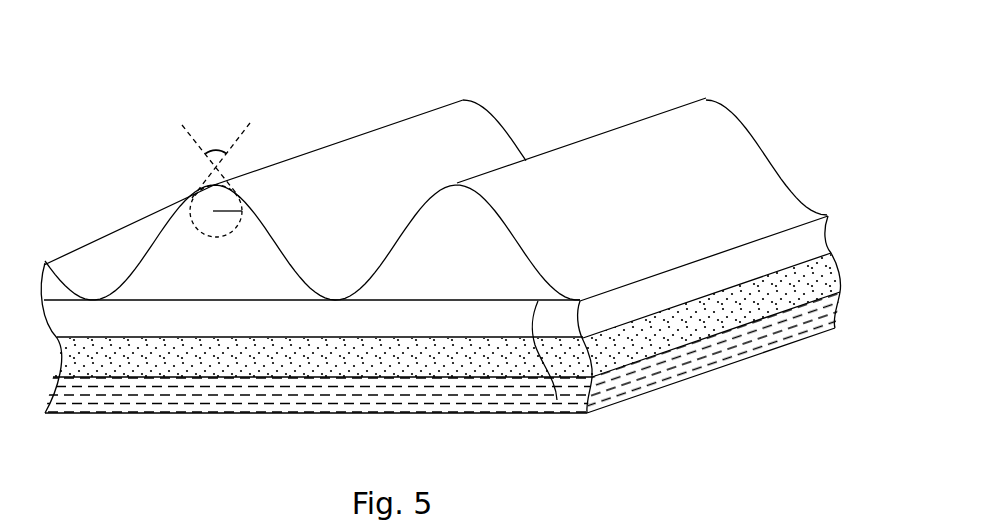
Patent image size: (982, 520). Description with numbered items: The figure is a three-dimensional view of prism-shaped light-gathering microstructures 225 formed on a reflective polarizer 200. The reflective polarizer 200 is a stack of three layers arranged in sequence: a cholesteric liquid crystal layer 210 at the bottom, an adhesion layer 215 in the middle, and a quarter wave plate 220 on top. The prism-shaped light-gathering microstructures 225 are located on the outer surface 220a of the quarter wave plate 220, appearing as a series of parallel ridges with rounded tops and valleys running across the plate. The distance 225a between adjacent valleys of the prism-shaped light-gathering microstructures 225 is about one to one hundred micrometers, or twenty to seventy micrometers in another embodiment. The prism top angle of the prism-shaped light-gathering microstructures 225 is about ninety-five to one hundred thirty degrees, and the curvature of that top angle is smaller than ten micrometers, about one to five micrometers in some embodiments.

The reflective polarizer 200 is at (451, 337).
The cholesteric liquid crystal layer 210 is at (686, 363).
The adhesion layer 215 is at (670, 324).
The quarter wave plate 220 is at (670, 289).
The outer surface 220a is at (557, 400).
The prism-shaped light-gathering microstructures 225 is at (363, 102).
The distance between adjacent valleys 225a is at (335, 317).